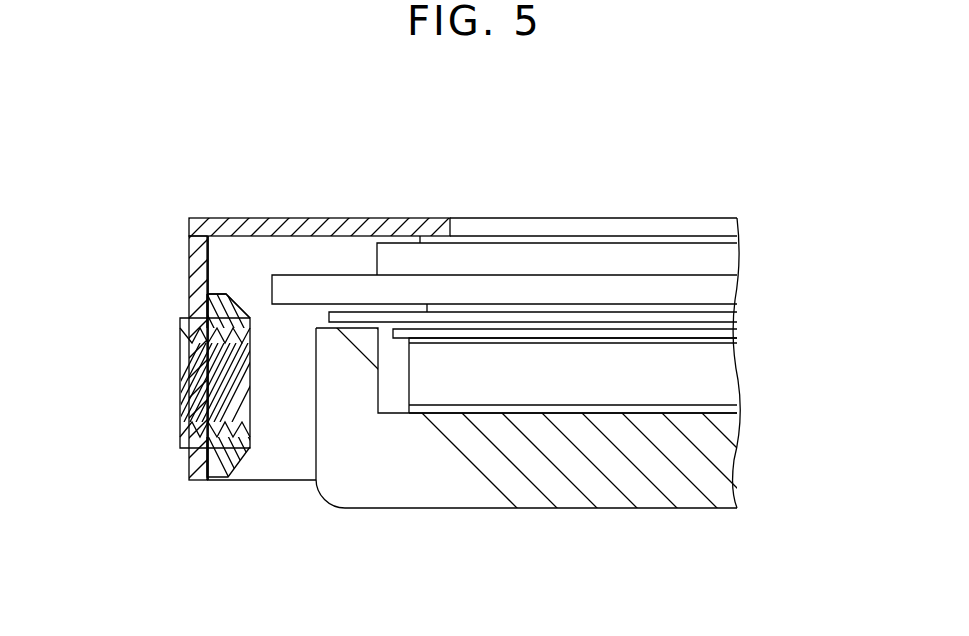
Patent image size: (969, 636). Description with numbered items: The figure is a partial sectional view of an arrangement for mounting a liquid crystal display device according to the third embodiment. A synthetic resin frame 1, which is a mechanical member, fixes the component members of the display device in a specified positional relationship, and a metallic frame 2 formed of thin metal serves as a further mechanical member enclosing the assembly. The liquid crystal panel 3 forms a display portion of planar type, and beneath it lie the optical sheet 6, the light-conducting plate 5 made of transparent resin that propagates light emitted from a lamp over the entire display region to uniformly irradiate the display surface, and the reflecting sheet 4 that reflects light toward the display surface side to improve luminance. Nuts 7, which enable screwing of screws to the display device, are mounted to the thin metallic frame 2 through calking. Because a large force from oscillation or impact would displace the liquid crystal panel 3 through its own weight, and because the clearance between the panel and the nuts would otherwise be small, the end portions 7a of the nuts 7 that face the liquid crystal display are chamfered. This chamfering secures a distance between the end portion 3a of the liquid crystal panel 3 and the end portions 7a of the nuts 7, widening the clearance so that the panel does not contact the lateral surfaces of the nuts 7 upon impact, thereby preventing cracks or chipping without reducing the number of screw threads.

The synthetic resin frame 1 is at (570, 470).
The metallic frame 2 is at (335, 223).
The liquid crystal panel 3 is at (601, 238).
The end portion of the liquid crystal panel 3a is at (300, 288).
The reflecting sheet 4 is at (687, 408).
The light-conducting plate 5 is at (702, 370).
The optical sheet 6 is at (742, 343).
The nuts 7 is at (223, 455).
The end portions of the nuts 7a is at (228, 313).